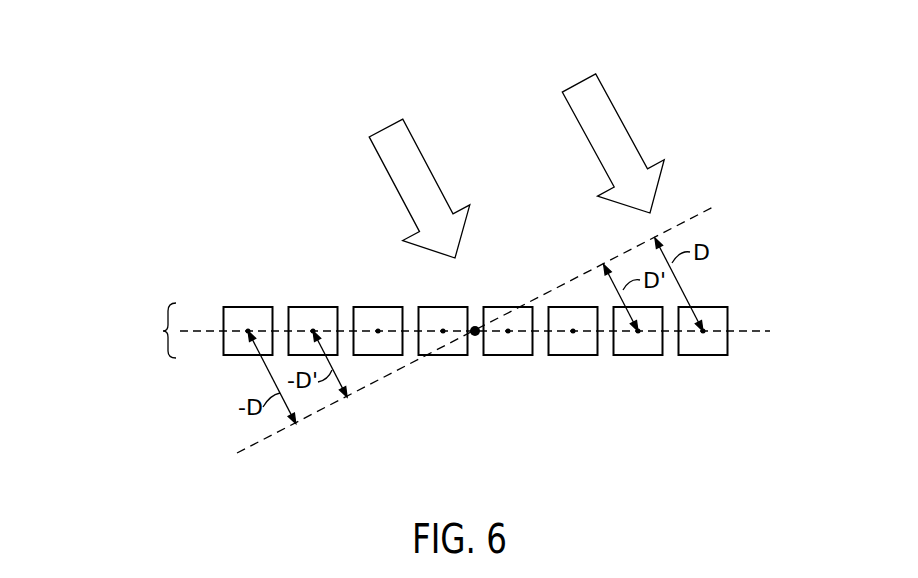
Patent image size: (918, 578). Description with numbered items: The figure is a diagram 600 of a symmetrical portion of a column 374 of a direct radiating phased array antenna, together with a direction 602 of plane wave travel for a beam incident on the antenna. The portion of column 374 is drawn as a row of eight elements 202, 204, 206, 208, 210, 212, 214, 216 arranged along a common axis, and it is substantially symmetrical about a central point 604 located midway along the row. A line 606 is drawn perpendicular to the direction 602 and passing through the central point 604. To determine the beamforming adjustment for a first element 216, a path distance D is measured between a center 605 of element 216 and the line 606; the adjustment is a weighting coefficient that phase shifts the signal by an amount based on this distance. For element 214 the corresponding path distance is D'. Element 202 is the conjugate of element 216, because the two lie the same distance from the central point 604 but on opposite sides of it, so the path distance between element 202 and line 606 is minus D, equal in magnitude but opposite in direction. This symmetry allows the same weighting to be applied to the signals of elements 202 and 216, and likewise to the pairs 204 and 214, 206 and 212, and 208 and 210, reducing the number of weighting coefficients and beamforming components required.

The diagram 600 is at (140, 173).
The column 374 is at (148, 330).
The element 202 is at (249, 307).
The element 204 is at (314, 307).
The element 206 is at (378, 307).
The element 208 is at (443, 307).
The element 210 is at (509, 355).
The element 212 is at (575, 355).
The element 214 is at (640, 355).
The element 216 is at (729, 315).
The direction 602 is at (415, 138).
The central point 604 is at (475, 337).
The center 605 is at (714, 307).
The line 606 is at (322, 407).